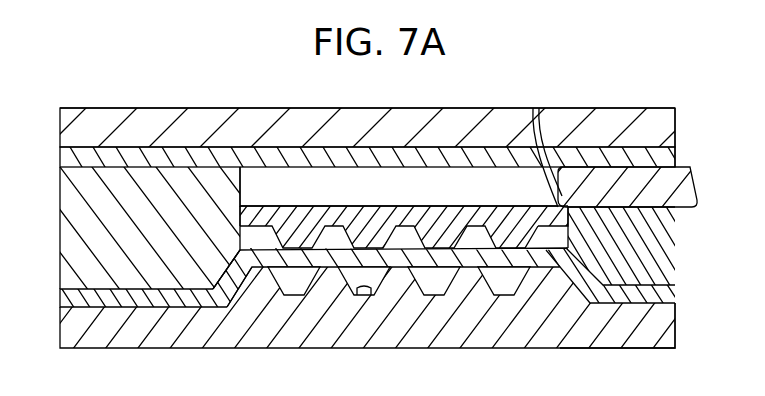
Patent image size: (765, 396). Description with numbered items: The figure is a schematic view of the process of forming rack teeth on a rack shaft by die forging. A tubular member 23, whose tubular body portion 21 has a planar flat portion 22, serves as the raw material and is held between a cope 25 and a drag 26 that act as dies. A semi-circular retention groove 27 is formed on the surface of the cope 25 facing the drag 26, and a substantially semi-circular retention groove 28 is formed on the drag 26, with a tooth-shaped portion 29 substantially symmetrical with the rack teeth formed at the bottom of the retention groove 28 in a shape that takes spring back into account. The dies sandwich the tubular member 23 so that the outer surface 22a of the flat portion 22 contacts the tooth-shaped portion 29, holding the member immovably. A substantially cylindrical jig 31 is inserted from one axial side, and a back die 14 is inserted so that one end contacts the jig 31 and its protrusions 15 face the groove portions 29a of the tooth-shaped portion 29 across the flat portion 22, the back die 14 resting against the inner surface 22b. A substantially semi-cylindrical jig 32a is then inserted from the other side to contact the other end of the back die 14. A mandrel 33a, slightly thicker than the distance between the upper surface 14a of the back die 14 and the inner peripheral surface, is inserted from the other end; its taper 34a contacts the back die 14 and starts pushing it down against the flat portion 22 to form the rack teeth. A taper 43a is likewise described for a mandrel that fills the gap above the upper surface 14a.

The back die 14 is at (492, 205).
The upper surface of the back die 14a is at (409, 203).
The protrusions 15 is at (371, 243).
The body portion 21 is at (342, 152).
The flat portion 22 is at (539, 248).
The outer surface of the flat portion 22a is at (294, 276).
The inner surface of the flat portion 22b is at (306, 243).
The tubular member 23 is at (676, 146).
The cope 25 is at (68, 127).
The drag 26 is at (72, 328).
The retention groove 27 is at (172, 150).
The retention groove 28 is at (157, 295).
The tooth-shaped portion 29 is at (413, 292).
The groove portions 29a is at (362, 291).
The jig 31 is at (70, 230).
The jig 32a is at (660, 247).
The mandrel 33a is at (688, 180).
The taper 34a is at (533, 108).
The taper 43a is at (648, 325).